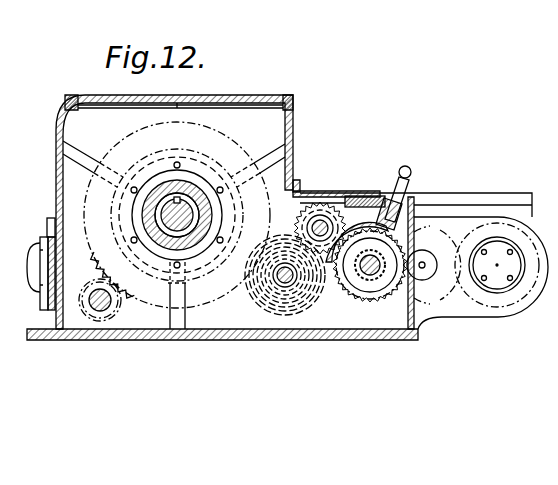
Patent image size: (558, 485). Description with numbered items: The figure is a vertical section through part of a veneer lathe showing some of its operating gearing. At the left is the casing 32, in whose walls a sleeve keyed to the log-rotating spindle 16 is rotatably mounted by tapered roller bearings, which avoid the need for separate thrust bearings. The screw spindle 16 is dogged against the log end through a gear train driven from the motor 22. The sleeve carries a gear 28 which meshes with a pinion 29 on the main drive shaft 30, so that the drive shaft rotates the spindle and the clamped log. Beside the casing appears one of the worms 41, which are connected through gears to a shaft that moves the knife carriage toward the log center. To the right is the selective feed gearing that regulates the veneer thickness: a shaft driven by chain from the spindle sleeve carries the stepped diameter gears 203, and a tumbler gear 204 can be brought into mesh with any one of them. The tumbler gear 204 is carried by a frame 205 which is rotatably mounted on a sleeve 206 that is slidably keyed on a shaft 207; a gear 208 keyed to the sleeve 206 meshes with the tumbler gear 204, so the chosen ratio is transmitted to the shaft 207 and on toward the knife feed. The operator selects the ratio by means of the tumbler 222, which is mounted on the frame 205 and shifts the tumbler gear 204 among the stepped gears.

The log-rotating spindle 16 is at (163, 214).
The motor 22 is at (141, 124).
The gear 28 is at (198, 298).
The pinion 29 is at (118, 300).
The main drive shaft 30 is at (98, 303).
The casing 32 is at (294, 130).
The worm 41 is at (27, 262).
The stepped diameter gears 203 is at (284, 290).
The tumbler gear 204 is at (322, 210).
The frame 205 is at (420, 216).
The sleeve 206 is at (373, 281).
The shaft 207 is at (381, 270).
The gear 208 is at (365, 292).
The tumbler 222 is at (411, 172).